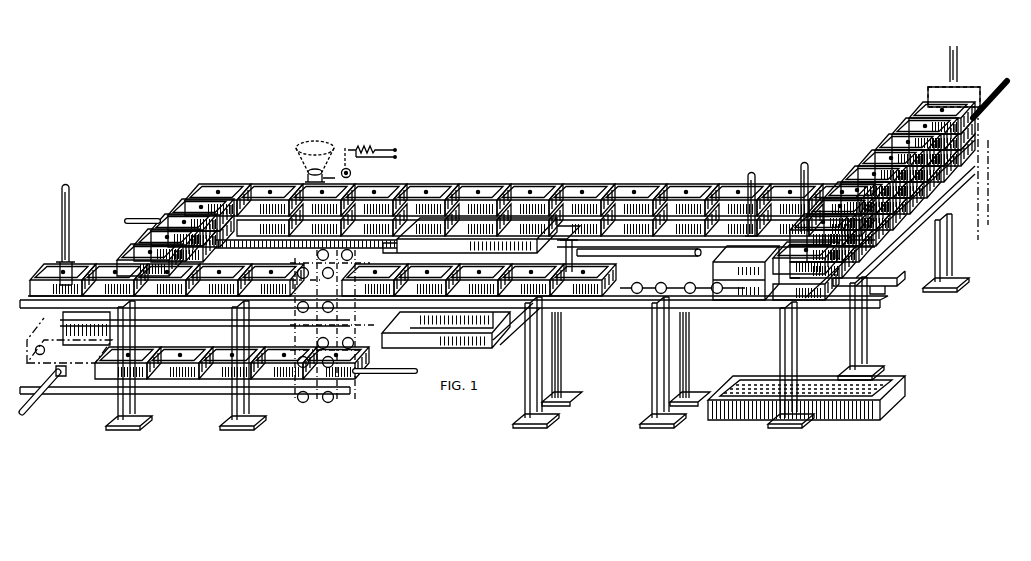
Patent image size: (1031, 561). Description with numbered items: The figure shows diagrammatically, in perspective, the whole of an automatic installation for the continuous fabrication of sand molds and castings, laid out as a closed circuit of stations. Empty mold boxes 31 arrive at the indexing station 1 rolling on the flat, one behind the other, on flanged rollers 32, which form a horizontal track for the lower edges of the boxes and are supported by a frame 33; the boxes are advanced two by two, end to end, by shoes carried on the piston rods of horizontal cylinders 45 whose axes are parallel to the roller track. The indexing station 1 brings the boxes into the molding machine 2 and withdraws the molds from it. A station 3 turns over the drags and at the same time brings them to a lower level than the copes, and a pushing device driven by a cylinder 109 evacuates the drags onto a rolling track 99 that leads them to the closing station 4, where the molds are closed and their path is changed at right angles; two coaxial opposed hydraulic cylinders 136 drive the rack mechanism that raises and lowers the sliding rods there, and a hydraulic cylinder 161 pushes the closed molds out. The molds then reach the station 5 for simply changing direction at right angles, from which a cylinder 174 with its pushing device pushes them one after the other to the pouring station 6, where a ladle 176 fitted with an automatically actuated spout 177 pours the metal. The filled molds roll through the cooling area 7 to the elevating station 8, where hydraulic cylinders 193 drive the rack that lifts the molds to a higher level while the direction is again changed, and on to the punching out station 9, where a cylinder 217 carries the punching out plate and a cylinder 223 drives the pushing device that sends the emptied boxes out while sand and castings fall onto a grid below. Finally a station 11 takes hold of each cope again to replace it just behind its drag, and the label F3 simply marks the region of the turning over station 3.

The indexing station 1 is at (653, 258).
The molding machine 2 is at (454, 236).
The station for turning over the drags 3 is at (338, 393).
The closing station 4 is at (82, 266).
The station for changing direction 5 is at (220, 181).
The pouring station 6 is at (349, 164).
The cooling area 7 is at (604, 181).
The elevating station 8 is at (992, 165).
The punching out station 9 is at (826, 301).
The cope handling station 11 is at (756, 228).
The mold boxes 31 is at (730, 301).
The flanged rollers 32 is at (661, 295).
The frame 33 is at (566, 372).
The horizontal cylinder 45 is at (668, 253).
The rolling track 99 is at (203, 394).
The cylinder 109 is at (402, 370).
The hydraulic cylinders 136 is at (68, 226).
The hydraulic cylinder 161 is at (52, 396).
The cylinder 174 is at (157, 222).
The ladle 176 is at (318, 152).
The pouring spout 177 is at (320, 179).
The hydraulic cylinders 193 is at (950, 80).
The cylinder 217 is at (810, 169).
The cylinder 223 is at (878, 286).
The section indicator F3 is at (49, 313).